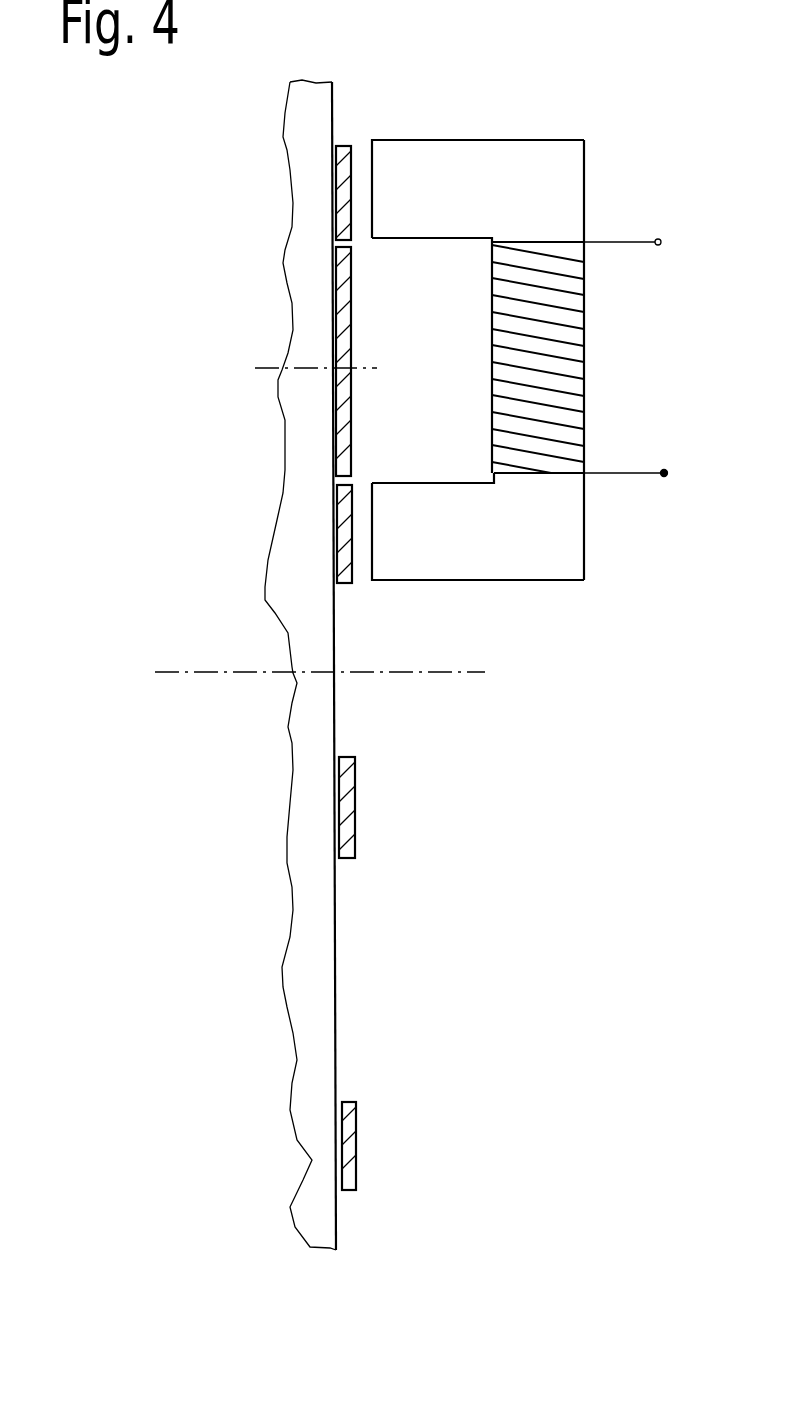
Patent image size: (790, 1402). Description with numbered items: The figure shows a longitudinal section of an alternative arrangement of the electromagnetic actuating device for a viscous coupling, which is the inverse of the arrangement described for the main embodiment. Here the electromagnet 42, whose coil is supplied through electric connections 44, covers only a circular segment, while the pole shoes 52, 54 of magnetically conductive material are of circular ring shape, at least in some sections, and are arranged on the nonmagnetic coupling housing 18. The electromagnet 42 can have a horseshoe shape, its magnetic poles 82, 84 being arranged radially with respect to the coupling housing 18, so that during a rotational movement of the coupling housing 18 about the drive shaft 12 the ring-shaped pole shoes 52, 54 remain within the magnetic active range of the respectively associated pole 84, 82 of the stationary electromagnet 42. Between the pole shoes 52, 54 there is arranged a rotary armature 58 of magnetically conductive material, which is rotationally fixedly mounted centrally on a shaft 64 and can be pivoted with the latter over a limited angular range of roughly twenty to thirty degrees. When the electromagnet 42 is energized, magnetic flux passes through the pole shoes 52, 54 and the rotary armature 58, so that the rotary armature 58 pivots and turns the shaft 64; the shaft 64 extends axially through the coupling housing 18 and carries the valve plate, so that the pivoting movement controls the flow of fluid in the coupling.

The drive shaft 12 is at (455, 672).
The coupling housing 18 is at (318, 88).
The electromagnet 42 is at (478, 356).
The electric connections 44 is at (667, 468).
The pole shoe 52 is at (343, 147).
The pole shoe 54 is at (344, 586).
The rotary armature 58 is at (343, 296).
The shaft 64 is at (255, 368).
The magnetic pole 82 is at (402, 572).
The magnetic pole 84 is at (396, 152).